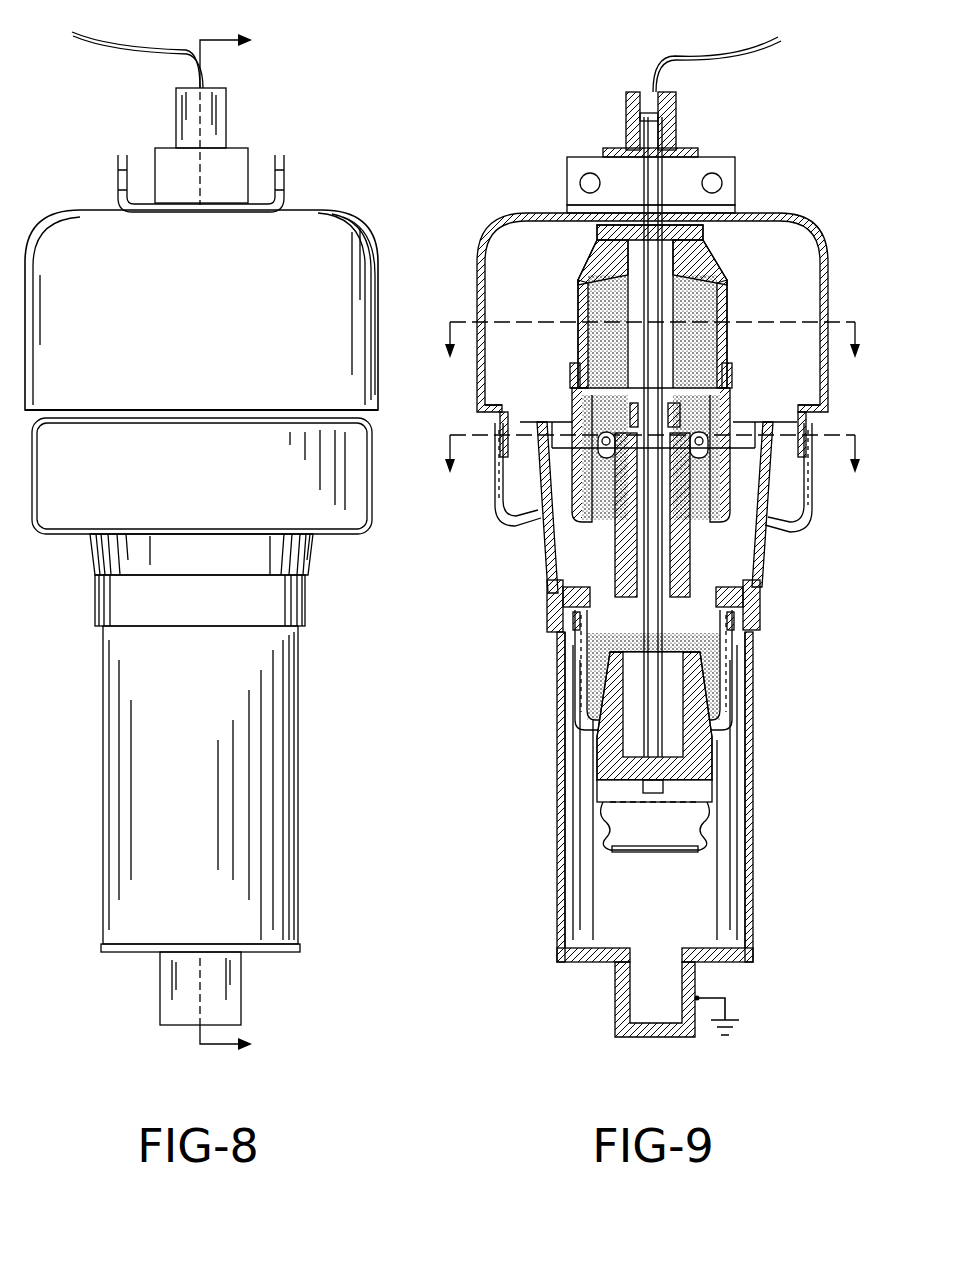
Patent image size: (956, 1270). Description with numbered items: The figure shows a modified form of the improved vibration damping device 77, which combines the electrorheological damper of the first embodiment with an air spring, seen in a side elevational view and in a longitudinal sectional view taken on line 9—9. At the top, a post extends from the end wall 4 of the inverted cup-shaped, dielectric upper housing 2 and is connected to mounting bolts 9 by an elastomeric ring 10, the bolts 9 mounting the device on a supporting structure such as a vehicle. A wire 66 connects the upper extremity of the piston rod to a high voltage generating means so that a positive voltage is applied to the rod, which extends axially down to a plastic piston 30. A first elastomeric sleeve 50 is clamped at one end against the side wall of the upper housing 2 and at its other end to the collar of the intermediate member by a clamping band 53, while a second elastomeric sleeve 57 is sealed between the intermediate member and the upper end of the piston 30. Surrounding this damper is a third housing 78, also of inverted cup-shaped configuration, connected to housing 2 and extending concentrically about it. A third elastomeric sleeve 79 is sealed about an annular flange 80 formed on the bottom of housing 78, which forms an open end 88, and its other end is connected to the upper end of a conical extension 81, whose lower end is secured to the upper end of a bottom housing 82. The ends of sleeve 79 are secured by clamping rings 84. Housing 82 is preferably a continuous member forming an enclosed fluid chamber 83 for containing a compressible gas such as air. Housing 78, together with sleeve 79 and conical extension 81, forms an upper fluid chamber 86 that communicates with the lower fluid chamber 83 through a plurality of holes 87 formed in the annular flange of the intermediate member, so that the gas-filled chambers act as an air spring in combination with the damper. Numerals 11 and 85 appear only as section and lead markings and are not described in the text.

In FIG. 8, the mounting bolt 9 is at (169, 543).
In FIG. 9, the elastomeric ring 10 is at (652, 355).
In FIG. 9, the section line 11- 11 is at (652, 468).
In FIG. 9, the upper housing 2 is at (740, 299).
In FIG. 9, the end wall 4 is at (702, 222).
In FIG. 9, the piston 30 is at (586, 745).
In FIG. 9, the first elastomeric sleeve 50 is at (530, 354).
In FIG. 9, the clamping band 53 is at (700, 442).
In FIG. 9, the second elastomeric sleeve 57 is at (728, 708).
In FIG. 9, the wire 66 is at (725, 53).
In FIG. 8, the damping device 77 is at (321, 200).
In FIG. 9, the damping device 77 is at (534, 658).
In FIG. 8, the third housing 78 is at (352, 248).
In FIG. 9, the third housing 78 is at (548, 221).
In FIG. 8, the third elastomeric sleeve 79 is at (75, 513).
In FIG. 9, the third elastomeric sleeve 79 is at (497, 513).
In FIG. 8, the annular flange 80 is at (362, 414).
In FIG. 9, the annular flange 80 is at (803, 418).
In FIG. 8, the conical extension 81 is at (302, 552).
In FIG. 9, the conical extension 81 is at (760, 547).
In FIG. 8, the bottom housing 82 is at (268, 775).
In FIG. 9, the bottom housing 82 is at (557, 852).
In FIG. 9, the fluid chamber 83 is at (593, 885).
In FIG. 9, the clamping ring 84 is at (494, 433).
In FIG. 9, the center conductor 85 is at (630, 550).
In FIG. 9, the upper fluid chamber 86 is at (563, 483).
In FIG. 9, the holes 87 is at (740, 600).
In FIG. 9, the open end 88 is at (805, 503).